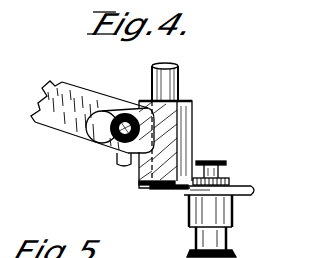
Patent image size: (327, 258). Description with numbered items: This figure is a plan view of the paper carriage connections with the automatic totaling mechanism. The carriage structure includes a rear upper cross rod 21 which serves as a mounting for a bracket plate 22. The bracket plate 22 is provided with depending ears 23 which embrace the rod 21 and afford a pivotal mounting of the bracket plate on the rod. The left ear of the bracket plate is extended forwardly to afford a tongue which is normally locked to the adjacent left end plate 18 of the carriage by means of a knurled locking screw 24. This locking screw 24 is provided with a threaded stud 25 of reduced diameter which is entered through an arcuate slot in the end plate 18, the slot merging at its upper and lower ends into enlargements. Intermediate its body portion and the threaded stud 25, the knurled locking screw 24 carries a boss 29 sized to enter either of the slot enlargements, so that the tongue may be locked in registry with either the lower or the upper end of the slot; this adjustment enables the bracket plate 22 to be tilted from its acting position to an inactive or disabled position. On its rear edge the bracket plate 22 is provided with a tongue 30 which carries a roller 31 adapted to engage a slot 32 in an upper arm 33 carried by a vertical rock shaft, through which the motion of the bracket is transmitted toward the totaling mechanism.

The left end plate 18 is at (252, 194).
The rear upper cross rod 21 is at (166, 68).
The bracket plate 22 is at (168, 125).
The depending ears 23 is at (232, 182).
The knurled locking screw 24 is at (210, 218).
The threaded stud 25 is at (222, 176).
The boss 29 is at (188, 194).
The tongue 30 is at (104, 111).
The roller 31 is at (119, 162).
The slot 32 is at (101, 125).
The upper arm 33 is at (80, 88).